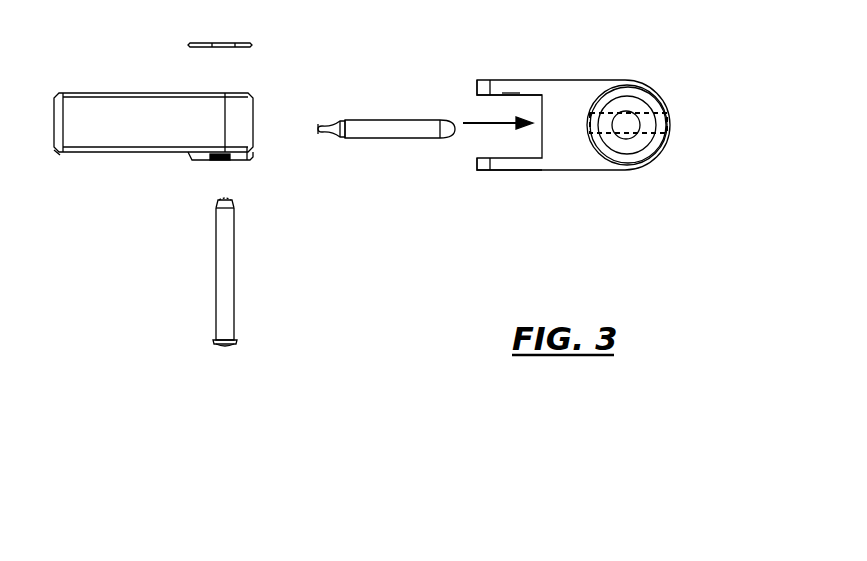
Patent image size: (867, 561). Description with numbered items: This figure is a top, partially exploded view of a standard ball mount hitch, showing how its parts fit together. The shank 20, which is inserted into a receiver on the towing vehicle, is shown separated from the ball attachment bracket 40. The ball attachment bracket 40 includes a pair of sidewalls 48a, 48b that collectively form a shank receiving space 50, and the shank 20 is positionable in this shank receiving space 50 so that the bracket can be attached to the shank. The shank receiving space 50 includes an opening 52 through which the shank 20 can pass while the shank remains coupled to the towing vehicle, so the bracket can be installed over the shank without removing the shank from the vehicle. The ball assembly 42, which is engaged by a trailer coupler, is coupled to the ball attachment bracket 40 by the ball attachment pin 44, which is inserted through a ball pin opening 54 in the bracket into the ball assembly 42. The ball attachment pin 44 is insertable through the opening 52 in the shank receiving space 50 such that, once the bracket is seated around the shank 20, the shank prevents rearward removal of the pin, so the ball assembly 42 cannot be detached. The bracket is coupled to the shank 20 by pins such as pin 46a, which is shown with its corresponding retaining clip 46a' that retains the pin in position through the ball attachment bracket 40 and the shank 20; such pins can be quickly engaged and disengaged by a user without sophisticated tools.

The shank 20 is at (128, 130).
The pin 46a is at (273, 272).
The retaining clip 46a' is at (261, 24).
The ball attachment pin 44 is at (383, 134).
The ball attachment bracket 40 is at (558, 98).
The sidewall 48a is at (508, 82).
The sidewall 48b is at (510, 163).
The ball assembly 42 is at (643, 143).
The opening 52 is at (470, 105).
The shank receiving space 50 is at (515, 143).
The ball pin opening 54 is at (673, 125).